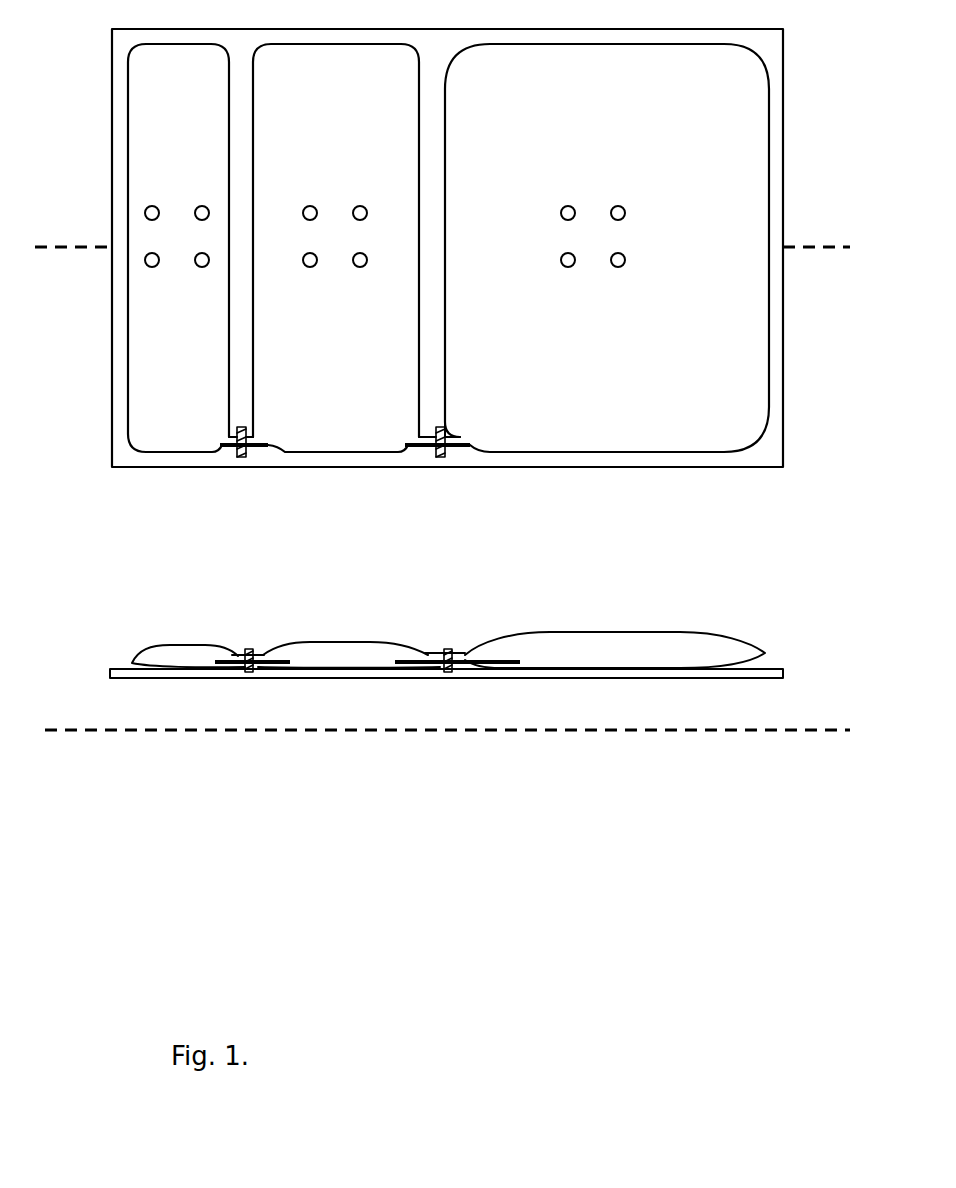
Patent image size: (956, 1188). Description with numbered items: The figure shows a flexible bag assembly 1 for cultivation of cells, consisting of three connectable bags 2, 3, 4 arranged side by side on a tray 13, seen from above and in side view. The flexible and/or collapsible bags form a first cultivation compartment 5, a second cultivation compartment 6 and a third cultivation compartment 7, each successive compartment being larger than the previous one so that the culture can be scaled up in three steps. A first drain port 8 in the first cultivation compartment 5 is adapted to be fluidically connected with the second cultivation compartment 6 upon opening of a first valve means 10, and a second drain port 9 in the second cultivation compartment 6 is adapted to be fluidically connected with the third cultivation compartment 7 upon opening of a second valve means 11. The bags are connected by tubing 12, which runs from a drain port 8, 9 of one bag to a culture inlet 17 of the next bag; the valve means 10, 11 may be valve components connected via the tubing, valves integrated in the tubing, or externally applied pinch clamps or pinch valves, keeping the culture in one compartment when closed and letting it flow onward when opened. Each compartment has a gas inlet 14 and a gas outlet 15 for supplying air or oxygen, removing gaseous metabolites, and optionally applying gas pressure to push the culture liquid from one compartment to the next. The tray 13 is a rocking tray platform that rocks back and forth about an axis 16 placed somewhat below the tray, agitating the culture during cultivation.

The flexible bag assembly 1 is at (447, 500).
The bag 2 is at (196, 452).
The bag 3 is at (300, 452).
The bag 4 is at (637, 457).
The first cultivation compartment 5 is at (160, 405).
The second cultivation compartment 6 is at (355, 407).
The third cultivation compartment 7 is at (562, 418).
The first drain port 8 is at (223, 448).
The second drain port 9 is at (425, 653).
The first valve means 10 is at (248, 454).
The second valve means 11 is at (447, 653).
The tubing 12 is at (430, 658).
The tray 13 is at (783, 443).
The gas inlet 14 is at (562, 210).
The gas outlet 15 is at (612, 210).
The axis 16 is at (683, 762).
The culture inlet 17 is at (463, 434).